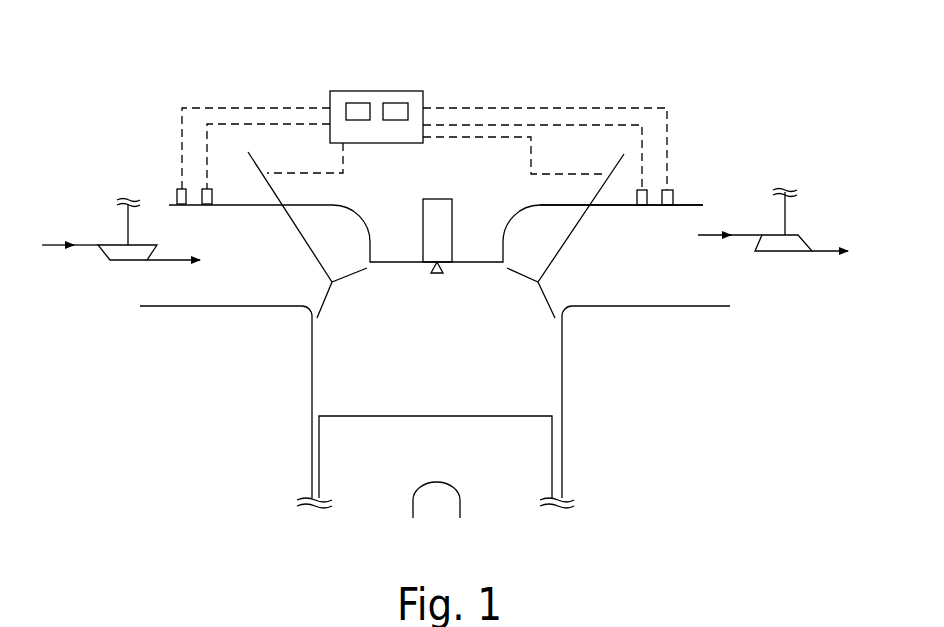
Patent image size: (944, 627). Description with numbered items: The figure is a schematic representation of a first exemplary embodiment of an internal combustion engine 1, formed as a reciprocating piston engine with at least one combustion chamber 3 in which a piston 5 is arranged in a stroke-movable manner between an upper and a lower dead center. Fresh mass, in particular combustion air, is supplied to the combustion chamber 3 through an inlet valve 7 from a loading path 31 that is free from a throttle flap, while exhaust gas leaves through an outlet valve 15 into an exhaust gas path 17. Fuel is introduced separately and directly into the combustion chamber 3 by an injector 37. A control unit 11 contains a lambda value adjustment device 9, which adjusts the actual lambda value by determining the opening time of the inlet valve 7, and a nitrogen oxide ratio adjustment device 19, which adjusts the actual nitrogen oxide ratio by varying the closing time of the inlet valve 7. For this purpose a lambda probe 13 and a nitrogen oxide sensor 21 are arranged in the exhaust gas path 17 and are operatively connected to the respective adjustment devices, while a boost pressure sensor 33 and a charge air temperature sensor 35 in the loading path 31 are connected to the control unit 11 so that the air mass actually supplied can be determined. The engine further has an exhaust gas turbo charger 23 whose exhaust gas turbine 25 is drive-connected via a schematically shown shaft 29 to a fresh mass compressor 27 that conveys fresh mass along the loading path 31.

The internal combustion engine 1 is at (688, 72).
The combustion chamber 3 is at (439, 362).
The piston 5 is at (542, 458).
The inlet valve 7 is at (302, 237).
The lambda value adjustment device 9 is at (358, 103).
The control unit 11 is at (411, 90).
The lambda probe 13 is at (674, 198).
The outlet valve 15 is at (572, 237).
The exhaust gas path 17 is at (690, 208).
The nitrogen oxide ratio adjustment device 19 is at (395, 103).
The nitrogen oxide sensor 21 is at (643, 190).
The exhaust gas turbo charger 23 is at (793, 143).
The exhaust gas turbine 25 is at (785, 253).
The fresh mass compressor 27 is at (128, 262).
The shaft 29 is at (128, 223).
The loading path 31 is at (207, 307).
The boost pressure sensor 33 is at (175, 194).
The charge air temperature sensor 35 is at (213, 190).
The injector 37 is at (437, 200).